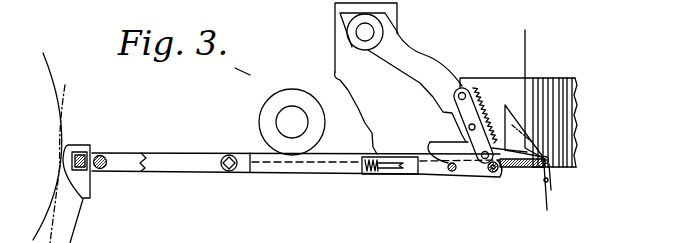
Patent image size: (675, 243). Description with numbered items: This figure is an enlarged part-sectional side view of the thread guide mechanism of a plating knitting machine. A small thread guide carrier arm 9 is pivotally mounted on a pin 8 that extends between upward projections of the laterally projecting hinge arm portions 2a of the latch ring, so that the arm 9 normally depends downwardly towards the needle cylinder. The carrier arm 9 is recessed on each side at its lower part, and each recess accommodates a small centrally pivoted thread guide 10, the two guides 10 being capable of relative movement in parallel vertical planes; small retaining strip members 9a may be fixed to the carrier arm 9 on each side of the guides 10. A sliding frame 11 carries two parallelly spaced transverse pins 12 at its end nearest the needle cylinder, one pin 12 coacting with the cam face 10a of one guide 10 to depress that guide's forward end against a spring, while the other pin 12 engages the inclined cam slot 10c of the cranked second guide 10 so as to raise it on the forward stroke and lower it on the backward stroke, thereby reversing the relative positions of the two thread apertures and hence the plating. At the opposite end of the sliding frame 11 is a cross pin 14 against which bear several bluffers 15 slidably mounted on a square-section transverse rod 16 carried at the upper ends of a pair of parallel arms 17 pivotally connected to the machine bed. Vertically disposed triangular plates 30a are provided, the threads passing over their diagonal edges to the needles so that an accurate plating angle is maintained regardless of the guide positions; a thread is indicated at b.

The hinge arm portions 2a is at (343, 50).
The pin 8 is at (363, 32).
The thread guide carrier arm 9 is at (418, 50).
The retaining strip members 9a is at (470, 77).
The thread guide 10 is at (488, 108).
The cam face 10a is at (427, 147).
The cam slot 10c is at (505, 177).
The sliding frame 11 is at (438, 173).
The transverse pins 12 is at (453, 172).
The cross pin 14 is at (104, 155).
The bluffers 15 is at (80, 148).
The transverse rod 16 is at (63, 160).
The parallel arms 17 is at (68, 221).
The triangular plates 30a is at (505, 107).
The thread b is at (508, 103).